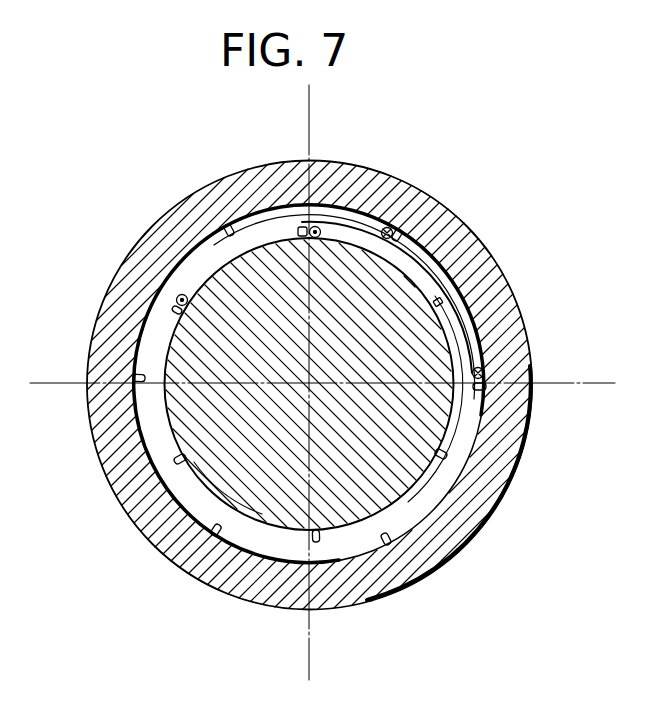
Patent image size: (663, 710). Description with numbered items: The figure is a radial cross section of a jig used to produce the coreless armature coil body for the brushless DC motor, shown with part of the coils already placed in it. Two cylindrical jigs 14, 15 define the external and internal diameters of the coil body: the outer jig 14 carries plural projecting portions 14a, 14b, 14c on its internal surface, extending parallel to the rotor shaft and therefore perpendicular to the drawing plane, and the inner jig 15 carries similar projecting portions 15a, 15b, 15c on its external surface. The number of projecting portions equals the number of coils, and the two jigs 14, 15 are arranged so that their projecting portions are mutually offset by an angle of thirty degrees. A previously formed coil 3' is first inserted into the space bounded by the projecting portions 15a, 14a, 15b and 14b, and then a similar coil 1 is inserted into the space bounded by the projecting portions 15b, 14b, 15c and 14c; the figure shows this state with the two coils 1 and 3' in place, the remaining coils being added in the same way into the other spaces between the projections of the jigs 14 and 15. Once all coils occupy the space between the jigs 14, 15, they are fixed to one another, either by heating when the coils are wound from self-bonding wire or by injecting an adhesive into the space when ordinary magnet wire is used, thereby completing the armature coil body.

The coil 1 is at (410, 262).
The coil 3' is at (344, 311).
The cylindrical jig 14 is at (150, 257).
The projecting portion 14a is at (228, 226).
The projecting portion 14b is at (400, 230).
The projecting portion 14c is at (487, 387).
The cylindrical jig 15 is at (187, 425).
The projecting portion 15a is at (173, 307).
The projecting portion 15b is at (311, 227).
The projecting portion 15c is at (443, 302).